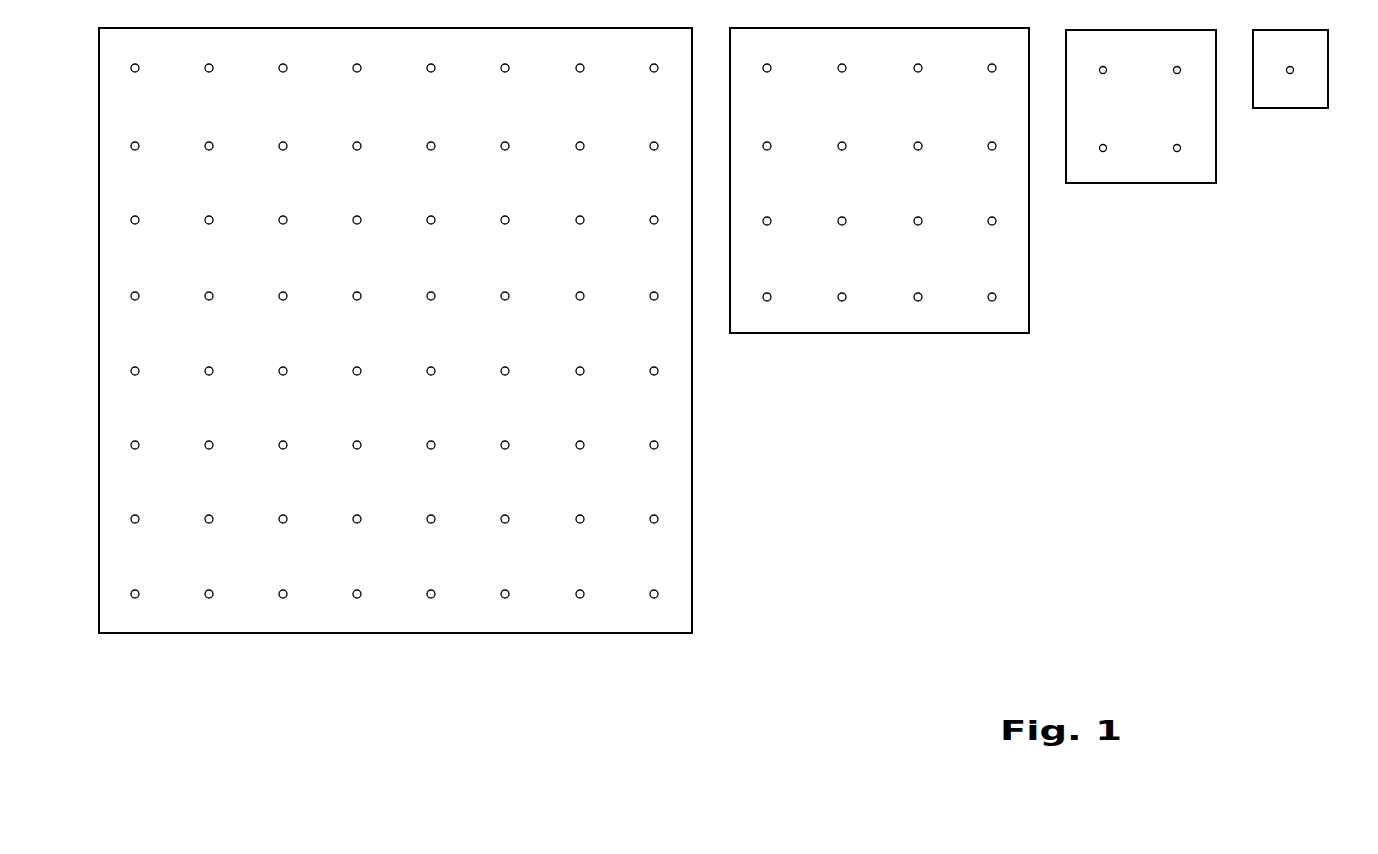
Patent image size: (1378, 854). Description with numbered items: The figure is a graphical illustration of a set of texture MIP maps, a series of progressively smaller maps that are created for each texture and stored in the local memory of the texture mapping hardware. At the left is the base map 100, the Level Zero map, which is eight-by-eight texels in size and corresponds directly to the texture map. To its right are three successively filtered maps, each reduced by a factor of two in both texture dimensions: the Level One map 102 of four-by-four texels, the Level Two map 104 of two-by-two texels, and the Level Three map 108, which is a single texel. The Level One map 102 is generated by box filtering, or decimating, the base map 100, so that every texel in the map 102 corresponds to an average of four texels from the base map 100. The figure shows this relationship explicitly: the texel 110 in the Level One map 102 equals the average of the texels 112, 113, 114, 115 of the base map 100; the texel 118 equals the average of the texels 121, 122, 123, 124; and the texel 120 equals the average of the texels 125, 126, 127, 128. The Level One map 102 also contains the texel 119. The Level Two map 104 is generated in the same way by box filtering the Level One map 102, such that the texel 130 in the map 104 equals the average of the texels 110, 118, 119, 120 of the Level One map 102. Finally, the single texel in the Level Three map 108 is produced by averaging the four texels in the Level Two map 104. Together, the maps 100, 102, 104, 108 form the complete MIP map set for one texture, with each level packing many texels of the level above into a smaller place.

The base map 100 is at (673, 482).
The Level 1 map 102 is at (880, 322).
The Level 2 map 104 is at (1136, 170).
The Level 3 map 108 is at (1280, 93).
The texel 110 is at (771, 69).
The texel 118 is at (846, 69).
The texel 119 is at (846, 147).
The texel 120 is at (771, 147).
The texel 130 is at (1107, 71).
The texel 112 is at (138, 72).
The texel 113 is at (212, 72).
The texel 121 is at (286, 72).
The texel 122 is at (360, 72).
The texel 114 is at (138, 150).
The texel 115 is at (212, 150).
The texel 123 is at (286, 150).
The texel 124 is at (360, 150).
The texel 125 is at (138, 224).
The texel 126 is at (212, 224).
The texel 127 is at (138, 300).
The texel 128 is at (212, 300).